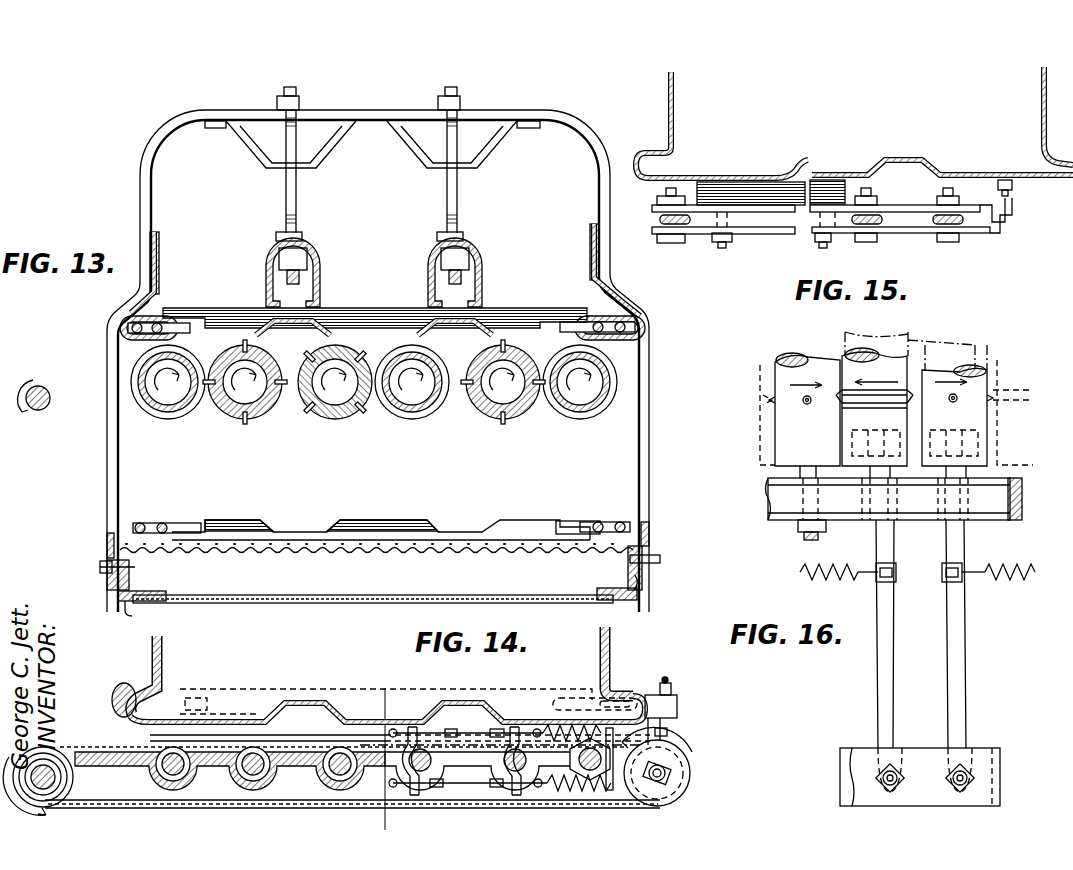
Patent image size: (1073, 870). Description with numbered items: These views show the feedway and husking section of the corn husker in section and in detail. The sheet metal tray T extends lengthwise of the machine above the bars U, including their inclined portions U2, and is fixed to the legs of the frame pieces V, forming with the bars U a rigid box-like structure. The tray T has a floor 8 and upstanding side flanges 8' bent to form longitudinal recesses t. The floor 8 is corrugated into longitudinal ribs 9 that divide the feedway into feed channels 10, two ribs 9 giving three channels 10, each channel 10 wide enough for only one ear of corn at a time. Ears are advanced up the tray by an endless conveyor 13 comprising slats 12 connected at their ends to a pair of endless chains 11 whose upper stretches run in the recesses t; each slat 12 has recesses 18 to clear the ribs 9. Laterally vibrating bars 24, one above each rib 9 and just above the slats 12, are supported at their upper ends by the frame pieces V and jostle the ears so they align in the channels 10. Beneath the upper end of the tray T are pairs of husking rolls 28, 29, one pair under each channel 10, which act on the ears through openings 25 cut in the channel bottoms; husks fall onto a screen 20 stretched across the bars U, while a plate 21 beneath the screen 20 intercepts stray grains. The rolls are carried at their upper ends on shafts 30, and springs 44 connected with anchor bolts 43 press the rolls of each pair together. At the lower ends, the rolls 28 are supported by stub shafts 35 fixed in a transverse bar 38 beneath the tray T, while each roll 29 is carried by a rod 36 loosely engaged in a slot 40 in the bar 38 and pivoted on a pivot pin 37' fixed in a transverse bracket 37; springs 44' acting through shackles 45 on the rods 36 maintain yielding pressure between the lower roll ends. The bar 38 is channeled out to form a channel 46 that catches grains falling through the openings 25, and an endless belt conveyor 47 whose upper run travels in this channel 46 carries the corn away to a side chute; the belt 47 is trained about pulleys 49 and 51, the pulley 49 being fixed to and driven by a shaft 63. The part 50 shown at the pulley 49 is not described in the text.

In FIG. 13, the frame piece V is at (330, 112).
In FIG. 13, the tray T is at (158, 275).
In FIG. 14, the tray T is at (166, 668).
In FIG. 15, the tray T is at (676, 112).
In FIG. 13, the side flange 8' is at (375, 287).
In FIG. 14, the side flange 8' is at (382, 673).
In FIG. 15, the side flange 8' is at (859, 125).
In FIG. 13, the longitudinal recess t is at (133, 338).
In FIG. 14, the longitudinal recess t is at (124, 690).
In FIG. 15, the longitudinal recess t is at (652, 172).
In FIG. 15, the floor 8 is at (1020, 207).
In FIG. 13, the longitudinal rib 9 is at (300, 336).
In FIG. 14, the longitudinal rib 9 is at (302, 702).
In FIG. 15, the longitudinal rib 9 is at (905, 158).
In FIG. 15, the feed channel 10 is at (840, 170).
In FIG. 13, the endless chain 11 is at (137, 323).
In FIG. 13, the slat 12 is at (490, 318).
In FIG. 14, the endless conveyor 13 is at (222, 692).
In FIG. 13, the recess 18 is at (284, 322).
In FIG. 13, the screen 20 is at (358, 554).
In FIG. 13, the plate 21 is at (384, 604).
In FIG. 13, the laterally vibrating bar 24 is at (322, 262).
In FIG. 13, the opening 25 is at (207, 320).
In FIG. 14, the opening 25 is at (357, 710).
In FIG. 15, the opening 25 is at (751, 193).
In FIG. 13, the husking roll 28 is at (238, 420).
In FIG. 16, the husking roll 28 is at (980, 380).
In FIG. 13, the husking roll 29 is at (168, 419).
In FIG. 16, the husking roll 29 is at (897, 362).
In FIG. 14, the shaft 30 is at (255, 778).
In FIG. 16, the stub shaft 35 is at (820, 537).
In FIG. 14, the rod 36 is at (183, 772).
In FIG. 15, the rod 36 is at (660, 220).
In FIG. 16, the rod 36 is at (950, 640).
In FIG. 15, the transverse bracket 37 is at (832, 235).
In FIG. 16, the transverse bracket 37 is at (920, 766).
In FIG. 15, the pivot pin 37' is at (834, 226).
In FIG. 16, the pivot pin 37' is at (925, 782).
In FIG. 14, the transverse bar 38 is at (369, 793).
In FIG. 16, the transverse bar 38 is at (775, 522).
In FIG. 14, the slot 40 is at (500, 752).
In FIG. 14, the anchor bolt 43 is at (490, 786).
In FIG. 16, the anchor bolt 43 is at (972, 566).
In FIG. 14, the spring 44 is at (500, 758).
In FIG. 16, the spring 44' is at (839, 587).
In FIG. 14, the shackle 45 is at (410, 730).
In FIG. 16, the shackle 45 is at (942, 578).
In FIG. 14, the channel 46 is at (240, 736).
In FIG. 16, the channel 46 is at (775, 500).
In FIG. 14, the endless belt conveyor 47 is at (282, 808).
In FIG. 14, the pulley 49 is at (672, 798).
In FIG. 14, the roller hub 50 is at (682, 771).
In FIG. 14, the pulley 51 is at (72, 778).
In FIG. 13, the shaft 63 is at (46, 406).
In FIG. 14, the shaft 63 is at (48, 770).
In FIG. 13, the bar U is at (158, 595).
In FIG. 13, the inclined portion U2 is at (381, 593).